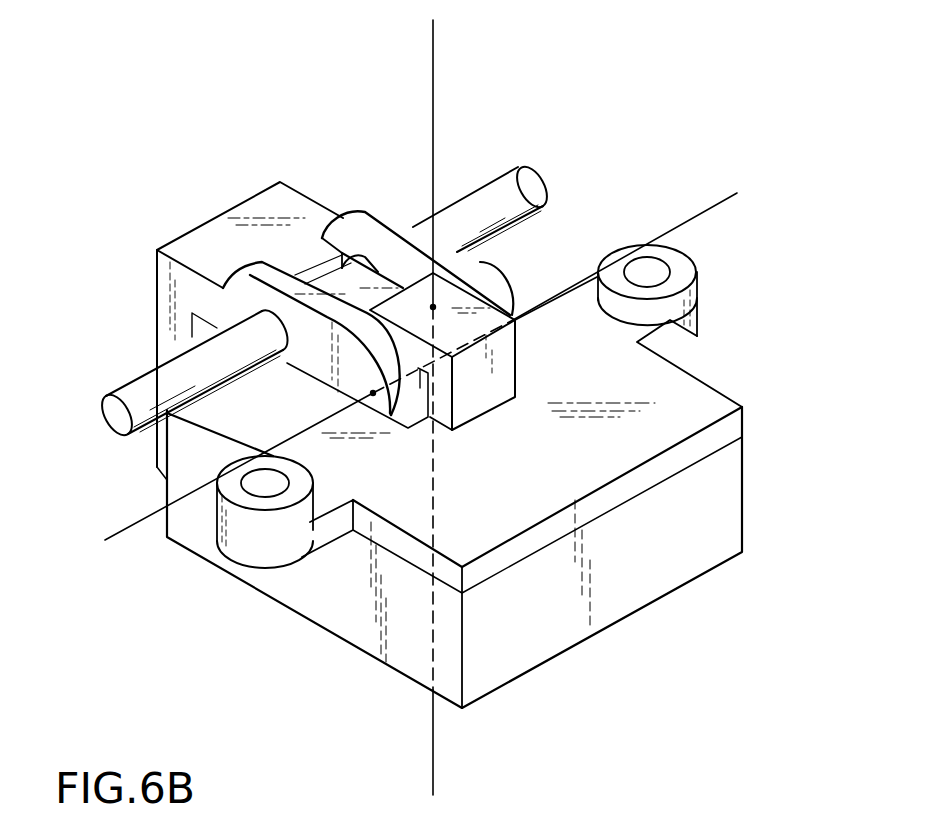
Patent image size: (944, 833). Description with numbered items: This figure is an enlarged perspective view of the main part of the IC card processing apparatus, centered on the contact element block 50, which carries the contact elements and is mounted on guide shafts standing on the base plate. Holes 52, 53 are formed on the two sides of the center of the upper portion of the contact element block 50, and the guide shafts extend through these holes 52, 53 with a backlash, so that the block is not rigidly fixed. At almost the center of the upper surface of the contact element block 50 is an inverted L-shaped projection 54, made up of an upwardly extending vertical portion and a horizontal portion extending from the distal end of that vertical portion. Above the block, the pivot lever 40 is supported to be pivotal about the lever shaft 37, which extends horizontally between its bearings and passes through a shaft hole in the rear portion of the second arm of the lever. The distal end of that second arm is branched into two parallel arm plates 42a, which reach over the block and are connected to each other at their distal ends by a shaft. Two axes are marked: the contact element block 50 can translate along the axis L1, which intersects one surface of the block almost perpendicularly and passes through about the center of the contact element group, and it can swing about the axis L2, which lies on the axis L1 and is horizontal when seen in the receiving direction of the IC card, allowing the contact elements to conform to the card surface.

The lever shaft 37 is at (102, 426).
The pivot lever 40 is at (157, 252).
The arm plate 42a is at (270, 277).
The contact element block 50 is at (688, 580).
The hole 52 is at (262, 490).
The hole 53 is at (658, 272).
The inverted L-shaped projection 54 is at (517, 370).
The translation axis L1 is at (434, 46).
The swing axis L2 is at (700, 213).